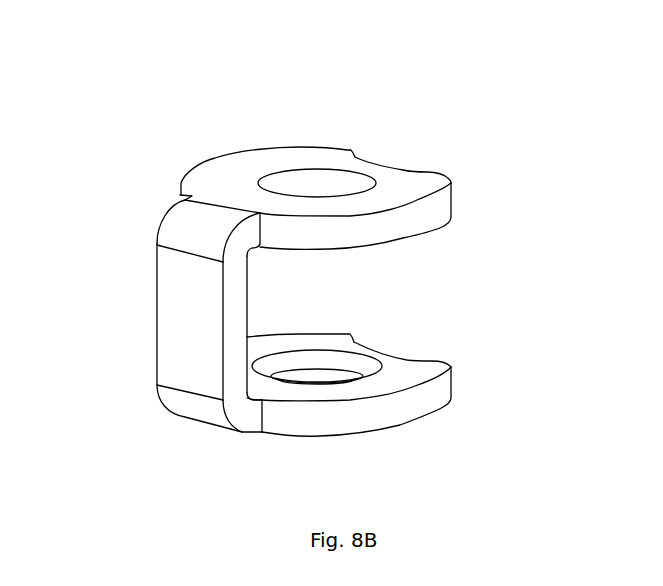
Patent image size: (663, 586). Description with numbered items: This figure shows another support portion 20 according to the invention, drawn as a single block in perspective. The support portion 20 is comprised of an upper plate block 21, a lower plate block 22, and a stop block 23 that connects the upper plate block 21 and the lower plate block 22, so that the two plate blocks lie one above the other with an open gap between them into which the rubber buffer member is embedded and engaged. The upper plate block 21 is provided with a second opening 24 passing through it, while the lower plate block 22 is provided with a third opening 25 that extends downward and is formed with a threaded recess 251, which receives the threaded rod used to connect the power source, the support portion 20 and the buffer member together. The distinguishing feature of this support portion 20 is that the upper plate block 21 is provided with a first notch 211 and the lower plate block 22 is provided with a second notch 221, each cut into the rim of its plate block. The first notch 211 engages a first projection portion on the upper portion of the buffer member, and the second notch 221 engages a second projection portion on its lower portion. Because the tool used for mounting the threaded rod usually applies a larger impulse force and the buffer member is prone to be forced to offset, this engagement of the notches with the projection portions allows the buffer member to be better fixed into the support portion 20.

The support portion 20 is at (409, 120).
The upper plate block 21 is at (263, 163).
The first notch 211 is at (400, 168).
The lower plate block 22 is at (407, 375).
The second notch 221 is at (400, 353).
The stop block 23 is at (190, 322).
The second opening 24 is at (315, 182).
The third opening 25 is at (333, 362).
The threaded recess 251 is at (317, 375).